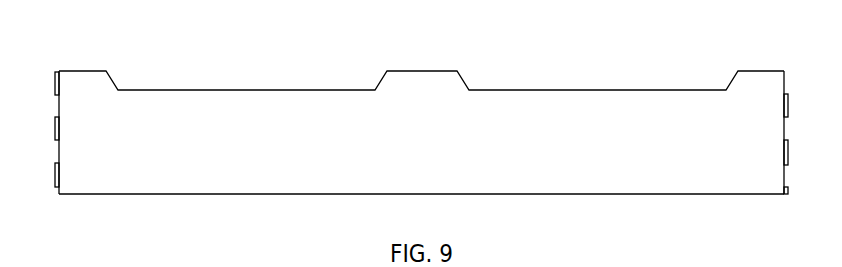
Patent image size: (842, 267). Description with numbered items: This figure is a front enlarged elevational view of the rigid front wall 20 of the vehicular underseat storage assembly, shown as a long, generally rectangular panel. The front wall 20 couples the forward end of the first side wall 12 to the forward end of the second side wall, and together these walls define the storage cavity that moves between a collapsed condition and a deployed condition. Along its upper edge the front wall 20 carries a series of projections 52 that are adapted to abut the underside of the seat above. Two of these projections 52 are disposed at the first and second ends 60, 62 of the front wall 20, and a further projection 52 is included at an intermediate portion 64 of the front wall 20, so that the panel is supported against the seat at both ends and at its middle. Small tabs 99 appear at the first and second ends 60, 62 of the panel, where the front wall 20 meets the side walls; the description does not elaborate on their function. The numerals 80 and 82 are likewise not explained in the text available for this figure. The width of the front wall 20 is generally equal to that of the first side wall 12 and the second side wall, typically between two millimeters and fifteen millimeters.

The front wall 20 is at (147, 53).
The projections 52 is at (87, 82).
The first end 60 is at (83, 143).
The second end 62 is at (757, 143).
The intermediate portion 64 is at (426, 143).
The tab 99 is at (55, 80).
The component 80 is at (109, 263).
The first side wall 12 is at (279, 263).
The component 82 is at (521, 3).